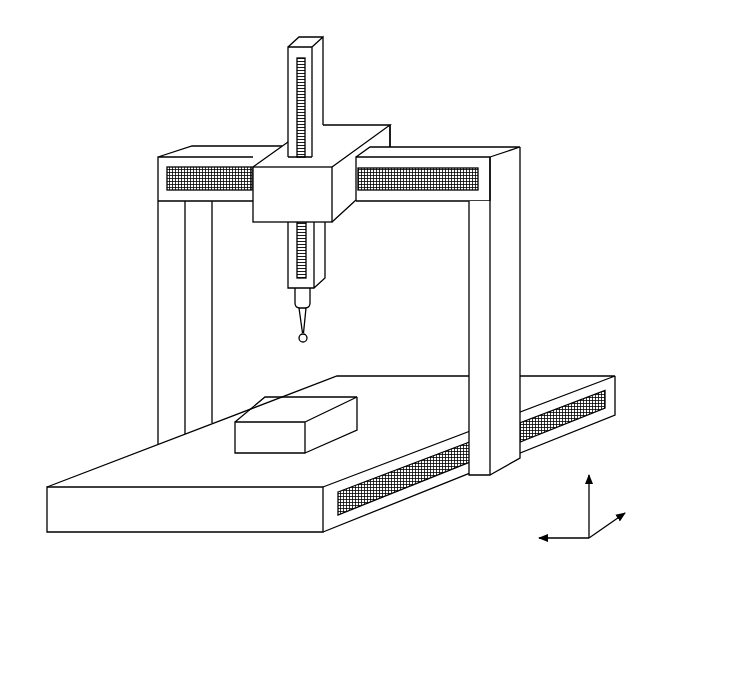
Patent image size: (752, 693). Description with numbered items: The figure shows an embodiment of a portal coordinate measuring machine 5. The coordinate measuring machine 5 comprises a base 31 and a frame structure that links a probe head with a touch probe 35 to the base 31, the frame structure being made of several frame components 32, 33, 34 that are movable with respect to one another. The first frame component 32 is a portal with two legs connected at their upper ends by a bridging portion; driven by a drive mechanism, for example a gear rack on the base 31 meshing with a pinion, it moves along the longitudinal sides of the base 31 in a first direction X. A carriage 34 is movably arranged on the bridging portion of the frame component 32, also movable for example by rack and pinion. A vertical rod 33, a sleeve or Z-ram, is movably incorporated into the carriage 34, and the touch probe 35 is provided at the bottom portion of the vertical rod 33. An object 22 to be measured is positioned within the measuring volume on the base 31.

The portal coordinate measuring machine 5 is at (508, 81).
The object 22 is at (293, 413).
The base 31 is at (108, 475).
The first frame component 32 is at (510, 235).
The vertical rod 33 is at (317, 258).
The carriage 34 is at (343, 138).
The touch probe 35 is at (292, 324).